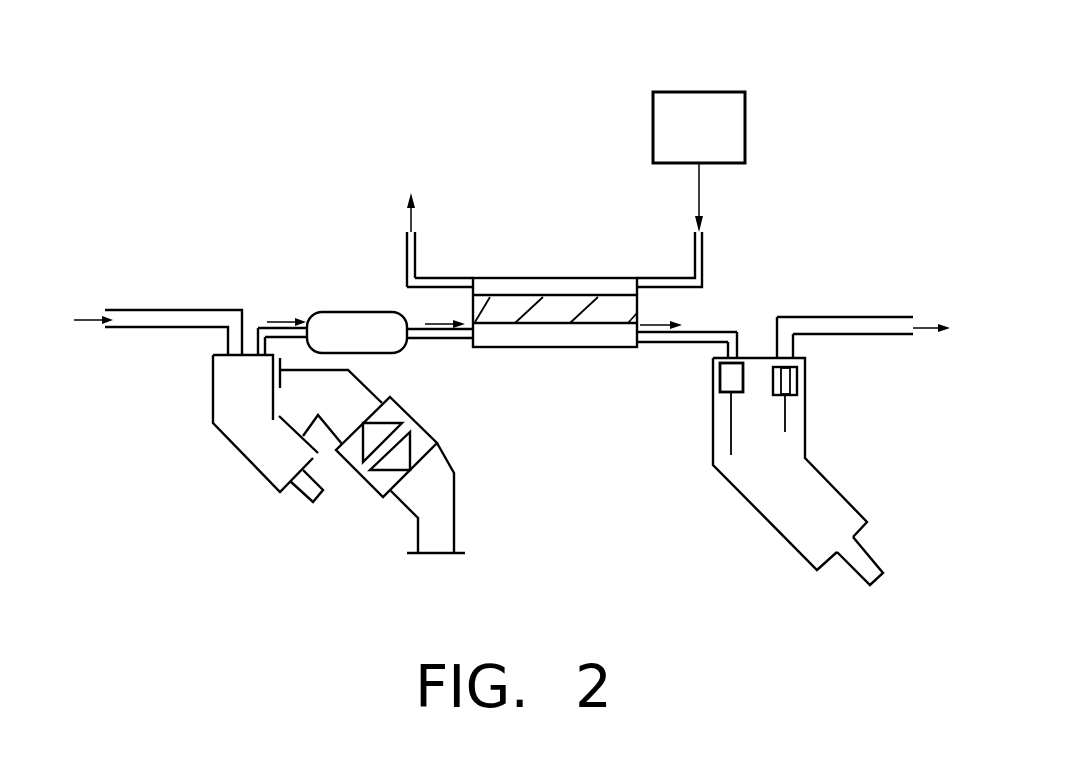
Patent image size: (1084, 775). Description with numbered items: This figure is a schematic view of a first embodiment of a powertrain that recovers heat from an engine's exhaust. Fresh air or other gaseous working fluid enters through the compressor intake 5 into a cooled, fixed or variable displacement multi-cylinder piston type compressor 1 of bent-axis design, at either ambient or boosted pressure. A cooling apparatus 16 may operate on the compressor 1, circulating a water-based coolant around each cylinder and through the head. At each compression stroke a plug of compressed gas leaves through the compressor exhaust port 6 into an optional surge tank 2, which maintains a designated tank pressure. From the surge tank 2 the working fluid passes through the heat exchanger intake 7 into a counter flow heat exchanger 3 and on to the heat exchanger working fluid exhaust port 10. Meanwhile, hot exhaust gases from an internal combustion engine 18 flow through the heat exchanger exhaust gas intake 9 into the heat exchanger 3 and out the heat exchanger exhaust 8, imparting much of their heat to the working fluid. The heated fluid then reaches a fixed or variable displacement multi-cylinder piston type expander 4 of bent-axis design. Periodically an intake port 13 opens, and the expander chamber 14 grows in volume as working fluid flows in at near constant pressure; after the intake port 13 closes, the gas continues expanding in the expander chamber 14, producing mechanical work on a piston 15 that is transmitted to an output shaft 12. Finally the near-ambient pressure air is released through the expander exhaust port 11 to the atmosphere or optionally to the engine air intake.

The compressor 1 is at (213, 405).
The surge tank 2 is at (390, 312).
The counter flow heat exchanger 3 is at (560, 278).
The expander 4 is at (806, 442).
The compressor intake 5 is at (198, 310).
The compressor exhaust port 6 is at (285, 322).
The heat exchanger intake 7 is at (422, 340).
The heat exchanger exhaust 8 is at (430, 278).
The heat exchanger exhaust gas intake 9 is at (677, 278).
The heat exchanger working fluid exhaust port 10 is at (700, 330).
The expander exhaust port 11 is at (853, 317).
The output shaft 12 is at (868, 550).
The intake port 13 is at (737, 340).
The expander chamber 14 is at (737, 377).
The piston 15 is at (720, 382).
The cooling apparatus 16 is at (363, 482).
The internal combustion engine 18 is at (746, 122).